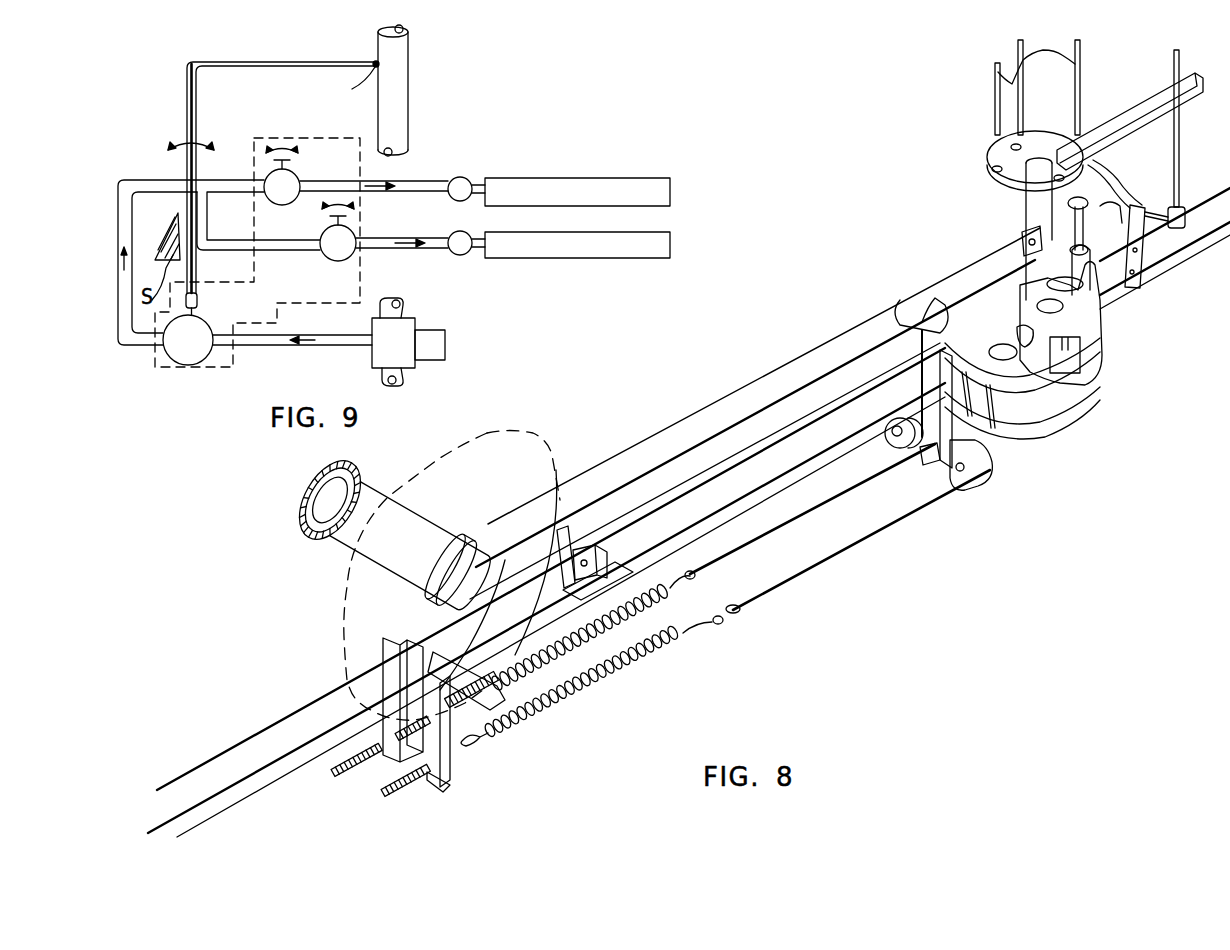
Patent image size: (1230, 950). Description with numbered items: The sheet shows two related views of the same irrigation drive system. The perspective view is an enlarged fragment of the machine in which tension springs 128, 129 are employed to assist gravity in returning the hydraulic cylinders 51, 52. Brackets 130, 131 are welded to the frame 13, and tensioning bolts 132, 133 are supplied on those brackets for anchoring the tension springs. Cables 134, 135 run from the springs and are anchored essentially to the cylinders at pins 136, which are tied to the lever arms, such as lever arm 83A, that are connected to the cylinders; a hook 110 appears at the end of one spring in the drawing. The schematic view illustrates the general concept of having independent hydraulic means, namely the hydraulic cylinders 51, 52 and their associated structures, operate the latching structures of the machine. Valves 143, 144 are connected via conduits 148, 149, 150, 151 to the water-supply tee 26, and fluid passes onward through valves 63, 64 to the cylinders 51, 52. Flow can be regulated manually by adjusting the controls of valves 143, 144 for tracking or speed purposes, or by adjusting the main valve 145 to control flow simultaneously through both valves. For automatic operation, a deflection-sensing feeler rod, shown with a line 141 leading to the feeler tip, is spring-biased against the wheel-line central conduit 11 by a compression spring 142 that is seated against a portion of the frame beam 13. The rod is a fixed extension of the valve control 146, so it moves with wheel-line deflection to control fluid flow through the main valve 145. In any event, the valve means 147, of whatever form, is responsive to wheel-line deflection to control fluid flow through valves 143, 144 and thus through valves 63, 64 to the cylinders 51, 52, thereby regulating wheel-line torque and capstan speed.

In FIG. 9, the wheel-line central conduit 11 is at (396, 50).
In FIG. 9, the supply pipe 141 is at (210, 63).
In FIG. 9, the compression spring 142 is at (196, 252).
In FIG. 9, the frame beam 13 is at (172, 233).
In FIG. 8, the frame beam 13 is at (300, 735).
In FIG. 9, the valve control 146 is at (197, 300).
In FIG. 9, the valve means 147 is at (292, 305).
In FIG. 9, the valve 143 is at (268, 171).
In FIG. 9, the valve 144 is at (346, 259).
In FIG. 9, the conduit 150 is at (281, 251).
In FIG. 9, the conduit 149 is at (116, 334).
In FIG. 9, the conduit 151 is at (442, 250).
In FIG. 9, the valve 63 is at (496, 165).
In FIG. 9, the valve 64 is at (461, 256).
In FIG. 9, the hydraulic cylinder 51 is at (564, 180).
In FIG. 9, the hydraulic cylinder 52 is at (565, 259).
In FIG. 8, the hydraulic cylinder 52 is at (1048, 93).
In FIG. 9, the main valve 145 is at (212, 352).
In FIG. 9, the conduit 148 is at (325, 350).
In FIG. 9, the water-supply tee 26 is at (409, 328).
In FIG. 8, the lever arm 83A is at (824, 357).
In FIG. 8, the bracket 130 is at (388, 758).
In FIG. 8, the bracket 131 is at (438, 771).
In FIG. 8, the tensioning bolt 132 is at (400, 796).
In FIG. 8, the tensioning bolt 133 is at (346, 778).
In FIG. 8, the spring 128 is at (656, 598).
In FIG. 8, the spring 129 is at (653, 662).
In FIG. 8, the hook 110 is at (508, 721).
In FIG. 8, the cable 134 is at (846, 492).
In FIG. 8, the cable 135 is at (863, 544).
In FIG. 8, the pin 136 is at (918, 300).